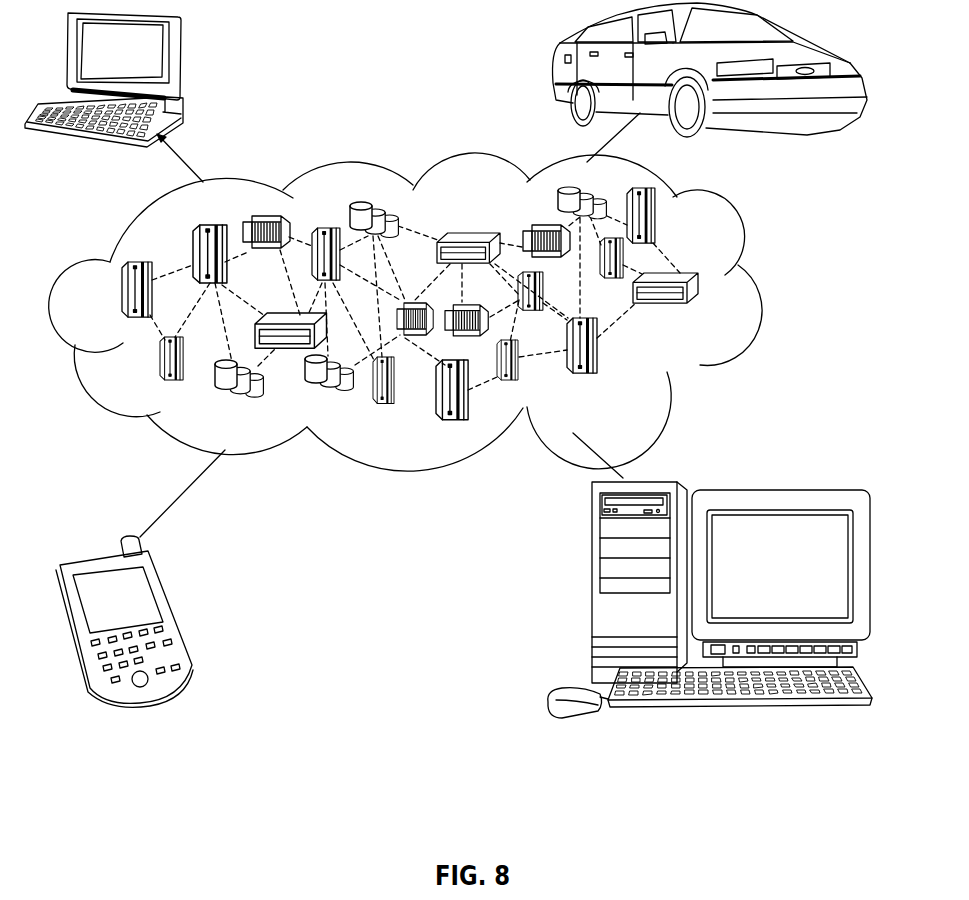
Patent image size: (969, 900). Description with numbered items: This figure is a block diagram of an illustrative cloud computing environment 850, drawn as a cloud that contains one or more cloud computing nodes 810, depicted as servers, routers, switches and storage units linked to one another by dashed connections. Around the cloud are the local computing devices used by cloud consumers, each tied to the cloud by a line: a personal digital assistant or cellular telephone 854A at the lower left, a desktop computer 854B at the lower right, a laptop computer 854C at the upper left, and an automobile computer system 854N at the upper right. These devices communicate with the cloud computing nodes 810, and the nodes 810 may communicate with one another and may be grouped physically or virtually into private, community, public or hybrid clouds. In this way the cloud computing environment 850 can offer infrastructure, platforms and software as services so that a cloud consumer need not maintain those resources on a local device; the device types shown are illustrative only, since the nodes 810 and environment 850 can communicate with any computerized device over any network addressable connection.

The cloud computing nodes 810 is at (717, 308).
The cloud computing environment 850 is at (742, 248).
The personal digital assistant (PDA) or cellular telephone 854A is at (173, 610).
The desktop computer 854B is at (592, 588).
The laptop computer 854C is at (178, 58).
The automobile computer system 854N is at (556, 60).